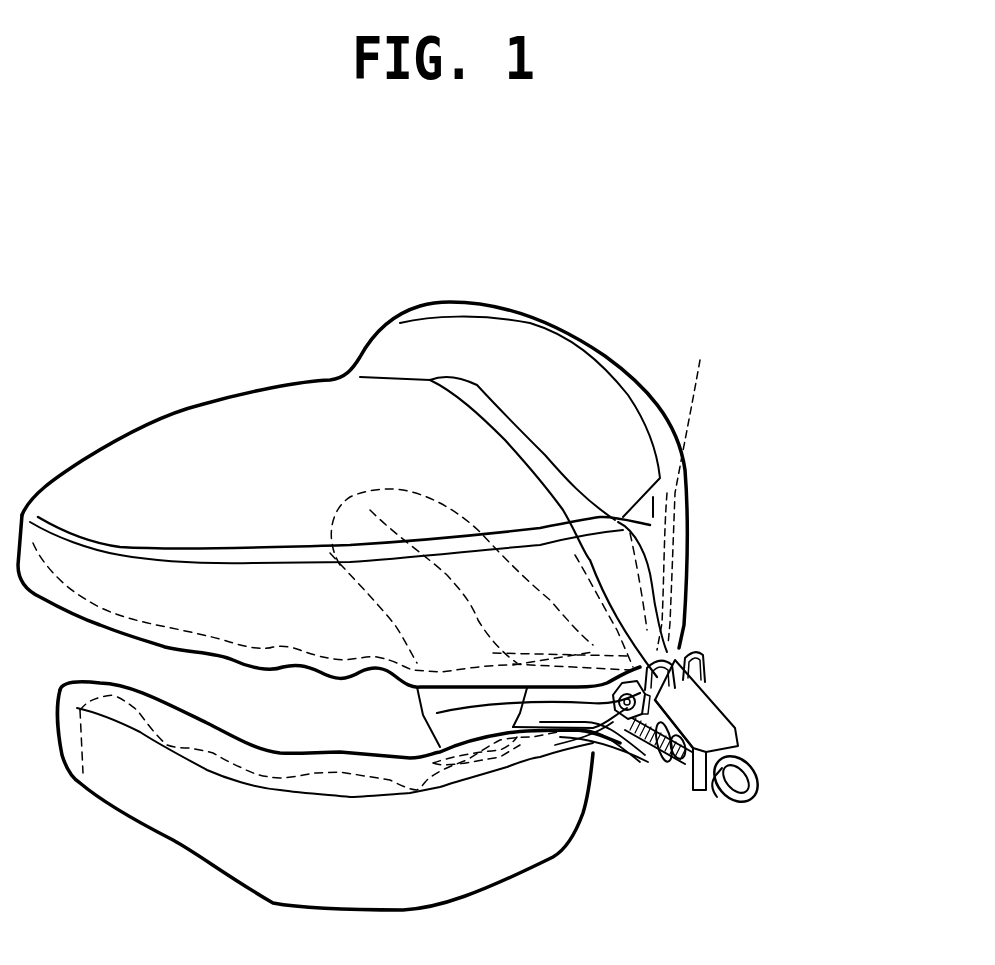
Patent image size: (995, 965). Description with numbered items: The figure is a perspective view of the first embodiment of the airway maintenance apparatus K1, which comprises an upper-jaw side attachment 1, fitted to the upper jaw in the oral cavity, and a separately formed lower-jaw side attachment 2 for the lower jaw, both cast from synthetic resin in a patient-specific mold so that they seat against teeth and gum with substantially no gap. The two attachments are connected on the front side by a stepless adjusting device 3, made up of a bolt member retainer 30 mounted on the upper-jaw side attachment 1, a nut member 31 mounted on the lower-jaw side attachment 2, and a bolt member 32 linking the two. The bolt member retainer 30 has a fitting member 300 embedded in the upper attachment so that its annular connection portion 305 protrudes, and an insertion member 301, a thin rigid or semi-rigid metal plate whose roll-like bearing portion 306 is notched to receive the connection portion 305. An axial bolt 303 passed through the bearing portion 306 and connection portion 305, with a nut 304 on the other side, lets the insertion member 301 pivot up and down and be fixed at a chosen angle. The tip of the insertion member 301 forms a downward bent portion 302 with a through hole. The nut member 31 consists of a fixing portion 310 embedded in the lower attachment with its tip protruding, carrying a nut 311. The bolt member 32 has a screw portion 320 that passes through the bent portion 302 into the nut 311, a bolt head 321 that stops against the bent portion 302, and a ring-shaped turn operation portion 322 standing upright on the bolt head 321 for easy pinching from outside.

The airway maintenance apparatus K1 is at (110, 334).
The upper-jaw side attachment 1 is at (236, 437).
The lower-jaw side attachment 2 is at (297, 860).
The stepless adjusting device 3 is at (653, 612).
The bolt member retainer 30 is at (690, 648).
The fitting member 300 is at (703, 482).
The insertion member 301 is at (705, 673).
The bent portion 302 is at (735, 738).
The axial bolt 303 is at (607, 720).
The nut 304 is at (437, 713).
The connection portion 305 is at (572, 526).
The bearing portion 306 is at (628, 517).
The nut member 31 is at (637, 768).
The fixing portion 310 is at (663, 768).
The nut 311 is at (677, 762).
The bolt member 32 is at (792, 794).
The screw portion 320 is at (603, 750).
The bolt head 321 is at (717, 797).
The turn operation portion 322 is at (757, 787).